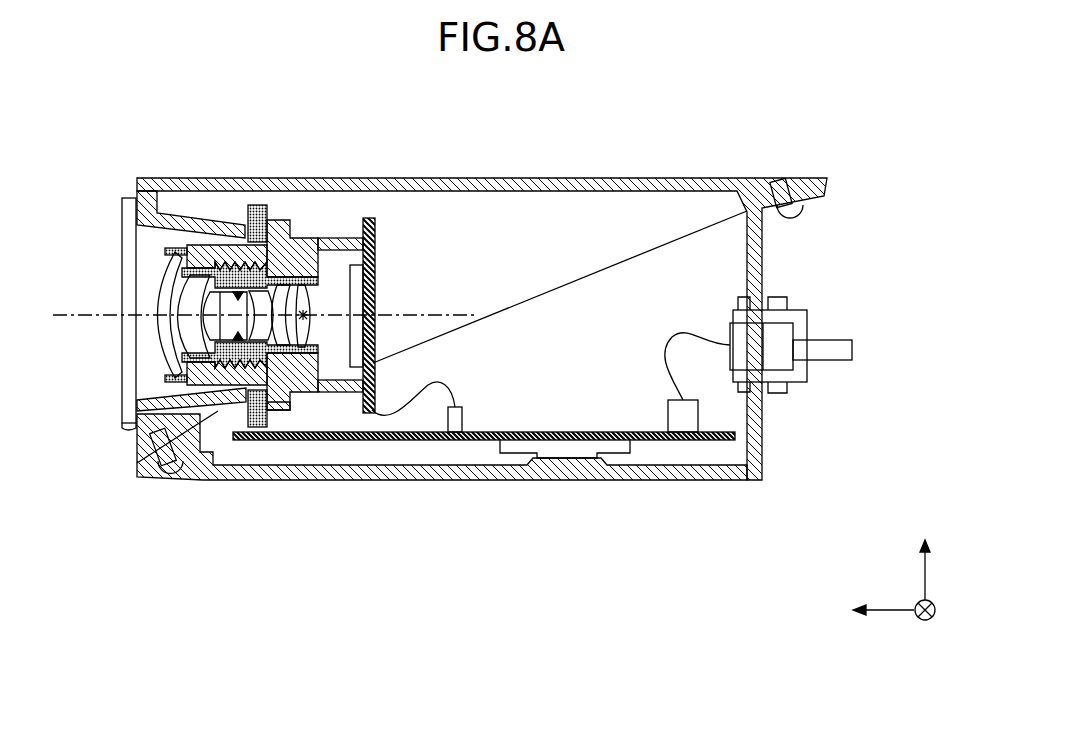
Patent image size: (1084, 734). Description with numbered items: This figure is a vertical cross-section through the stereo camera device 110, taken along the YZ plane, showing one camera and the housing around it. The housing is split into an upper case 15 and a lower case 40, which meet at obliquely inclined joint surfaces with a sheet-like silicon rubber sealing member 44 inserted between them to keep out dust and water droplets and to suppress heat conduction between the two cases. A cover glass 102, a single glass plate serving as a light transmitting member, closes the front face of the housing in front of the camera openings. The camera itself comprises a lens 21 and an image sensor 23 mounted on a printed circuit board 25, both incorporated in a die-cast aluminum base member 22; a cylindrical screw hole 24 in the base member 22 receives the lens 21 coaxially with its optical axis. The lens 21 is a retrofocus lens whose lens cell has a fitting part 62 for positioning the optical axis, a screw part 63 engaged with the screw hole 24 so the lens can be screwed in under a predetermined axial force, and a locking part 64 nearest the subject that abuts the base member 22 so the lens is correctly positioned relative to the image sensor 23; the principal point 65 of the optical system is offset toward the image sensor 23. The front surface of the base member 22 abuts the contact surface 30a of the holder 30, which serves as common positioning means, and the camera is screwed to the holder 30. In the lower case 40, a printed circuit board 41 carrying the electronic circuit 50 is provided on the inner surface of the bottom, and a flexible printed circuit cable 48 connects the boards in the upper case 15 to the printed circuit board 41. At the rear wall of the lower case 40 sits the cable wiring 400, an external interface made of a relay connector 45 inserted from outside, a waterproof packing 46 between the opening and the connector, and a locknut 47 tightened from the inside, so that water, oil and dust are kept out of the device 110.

The camera module 110 is at (858, 101).
The upper case 15 is at (569, 184).
The lens 21 is at (157, 267).
The base member 22 is at (307, 315).
The image sensor 23 is at (357, 285).
The screw hole 24 is at (233, 259).
The printed circuit board 25 is at (375, 245).
The holder 30 is at (258, 428).
The contact surface 30a is at (283, 414).
The lower case 40 is at (570, 480).
The printed circuit board 41 is at (478, 441).
The sealing member 44 is at (682, 237).
The relay connector 45 is at (797, 387).
The waterproof packing 46 is at (777, 393).
The locknut 47 is at (741, 393).
The flexible printed circuit cable 48 is at (415, 408).
The electronic circuit 50 is at (623, 447).
The fitting part 62 is at (290, 272).
The screw part 63 is at (210, 245).
The locking part 64 is at (175, 249).
The principal point 65 is at (350, 240).
The cover glass 102 is at (122, 285).
The cable wiring 400 is at (720, 537).